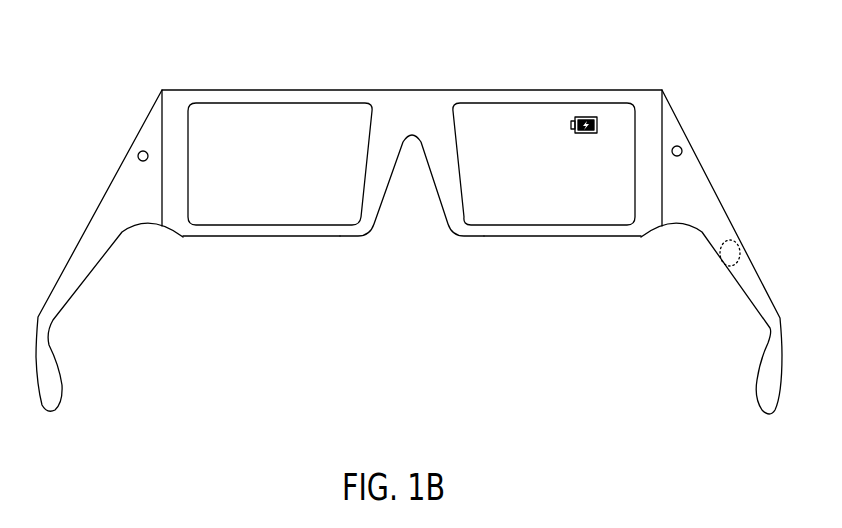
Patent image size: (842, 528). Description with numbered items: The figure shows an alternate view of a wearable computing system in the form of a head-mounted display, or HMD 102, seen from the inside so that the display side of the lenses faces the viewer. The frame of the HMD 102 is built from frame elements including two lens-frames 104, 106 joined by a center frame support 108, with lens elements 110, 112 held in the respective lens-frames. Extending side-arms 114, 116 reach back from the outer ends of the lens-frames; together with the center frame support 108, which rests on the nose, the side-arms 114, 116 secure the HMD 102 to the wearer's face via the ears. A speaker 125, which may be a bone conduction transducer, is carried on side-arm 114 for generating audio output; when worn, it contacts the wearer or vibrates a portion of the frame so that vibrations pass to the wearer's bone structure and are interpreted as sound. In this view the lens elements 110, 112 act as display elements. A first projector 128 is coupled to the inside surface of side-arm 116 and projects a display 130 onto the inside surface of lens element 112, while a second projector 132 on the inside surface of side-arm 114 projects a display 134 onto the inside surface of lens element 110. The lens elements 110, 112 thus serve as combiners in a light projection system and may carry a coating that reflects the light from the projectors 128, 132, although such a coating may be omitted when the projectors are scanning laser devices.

The HMD 102 is at (206, 74).
The lens-frame 104 is at (625, 237).
The lens-frame 106 is at (208, 238).
The center frame support 108 is at (410, 90).
The lens element 110 is at (509, 217).
The lens element 112 is at (296, 216).
The extending side-arm 114 is at (712, 187).
The extending side-arm 116 is at (88, 218).
The speaker 125 is at (725, 258).
The first projector 128 is at (138, 155).
The display 130 is at (277, 129).
The second projector 132 is at (678, 146).
The display 134 is at (575, 131).